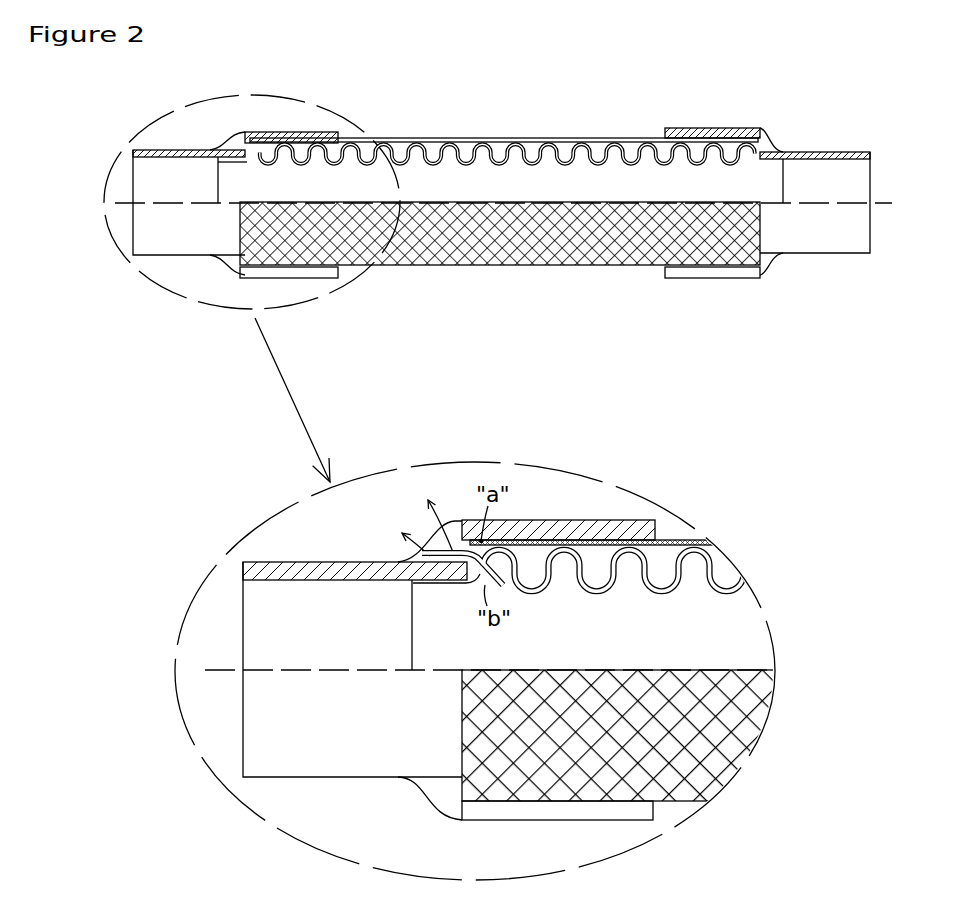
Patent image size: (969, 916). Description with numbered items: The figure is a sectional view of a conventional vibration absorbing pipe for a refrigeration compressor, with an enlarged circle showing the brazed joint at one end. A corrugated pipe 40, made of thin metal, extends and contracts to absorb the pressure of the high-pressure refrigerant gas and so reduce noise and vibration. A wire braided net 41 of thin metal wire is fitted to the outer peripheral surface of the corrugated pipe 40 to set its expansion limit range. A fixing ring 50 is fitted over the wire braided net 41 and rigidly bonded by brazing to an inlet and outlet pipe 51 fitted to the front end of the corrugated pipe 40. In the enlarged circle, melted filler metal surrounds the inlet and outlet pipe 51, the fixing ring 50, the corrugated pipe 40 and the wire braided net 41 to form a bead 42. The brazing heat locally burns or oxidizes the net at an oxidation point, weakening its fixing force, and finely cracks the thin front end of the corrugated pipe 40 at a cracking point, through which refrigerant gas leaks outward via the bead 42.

The corrugated pipe 40 is at (500, 165).
The wire braided net 41 is at (563, 138).
The bead 42 is at (438, 543).
The fixing ring 50 is at (703, 128).
The inlet and outlet pipe 51 is at (820, 152).